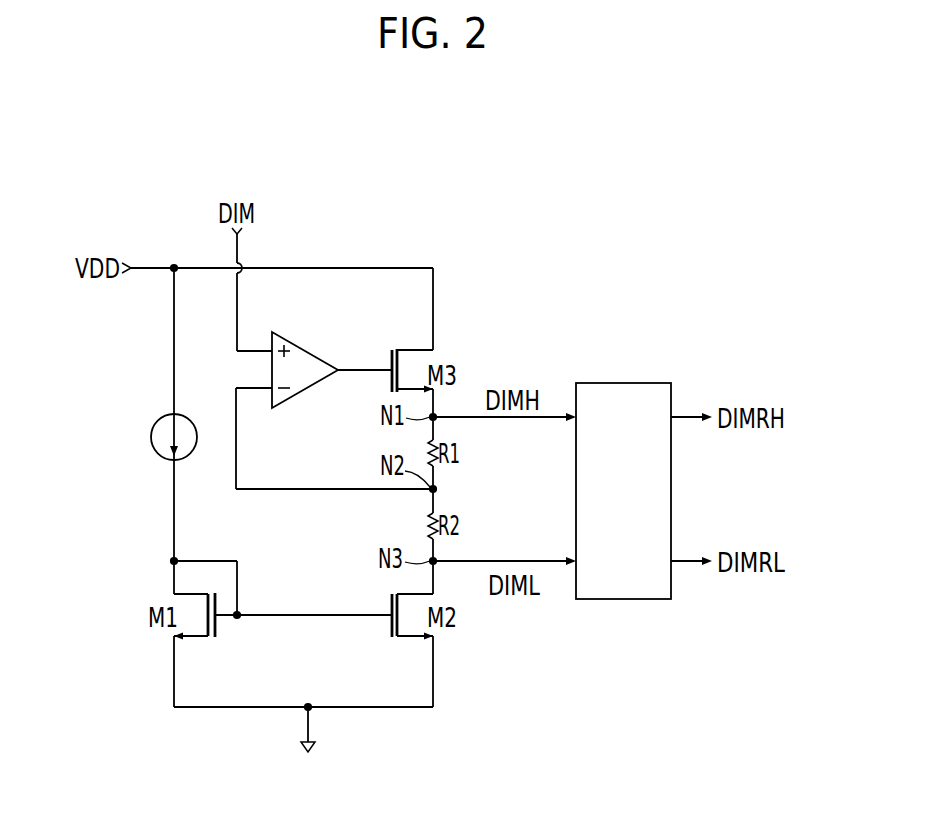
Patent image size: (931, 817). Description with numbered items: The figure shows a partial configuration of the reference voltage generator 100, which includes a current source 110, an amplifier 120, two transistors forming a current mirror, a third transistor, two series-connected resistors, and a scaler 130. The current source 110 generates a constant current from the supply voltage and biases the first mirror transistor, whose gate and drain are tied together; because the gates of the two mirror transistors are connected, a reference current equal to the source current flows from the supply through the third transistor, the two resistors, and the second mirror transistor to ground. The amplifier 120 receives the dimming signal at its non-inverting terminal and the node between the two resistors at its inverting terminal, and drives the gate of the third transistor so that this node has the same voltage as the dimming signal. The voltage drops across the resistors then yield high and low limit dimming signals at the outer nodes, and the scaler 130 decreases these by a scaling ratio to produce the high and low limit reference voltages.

The reference voltage generator 100 is at (478, 245).
The current source 110 is at (151, 437).
The amplifier 120 is at (307, 349).
The scaler 130 is at (623, 383).